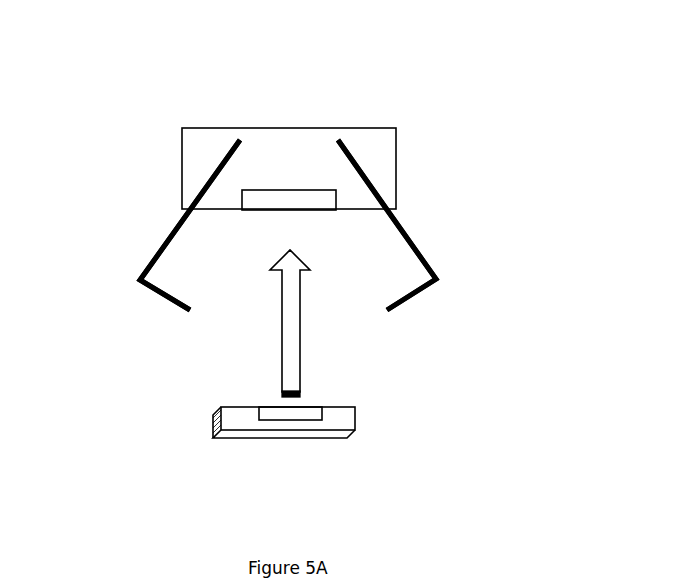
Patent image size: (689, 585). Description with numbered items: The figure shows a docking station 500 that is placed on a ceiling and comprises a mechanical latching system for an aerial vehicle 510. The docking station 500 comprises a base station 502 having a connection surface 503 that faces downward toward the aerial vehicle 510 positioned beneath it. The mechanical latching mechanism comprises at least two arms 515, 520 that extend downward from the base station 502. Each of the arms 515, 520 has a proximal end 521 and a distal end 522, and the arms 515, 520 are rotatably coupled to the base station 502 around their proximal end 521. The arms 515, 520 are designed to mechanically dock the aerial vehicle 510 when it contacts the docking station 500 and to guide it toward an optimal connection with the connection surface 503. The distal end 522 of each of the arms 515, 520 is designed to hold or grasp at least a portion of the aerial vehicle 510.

The docking station 500 is at (450, 147).
The base station 502 is at (300, 141).
The connection surface 503 is at (273, 207).
The aerial vehicle 510 is at (380, 422).
The arm 515 is at (170, 230).
The arm 520 is at (402, 225).
The proximal end 521 is at (238, 141).
The distal end 522 is at (160, 297).